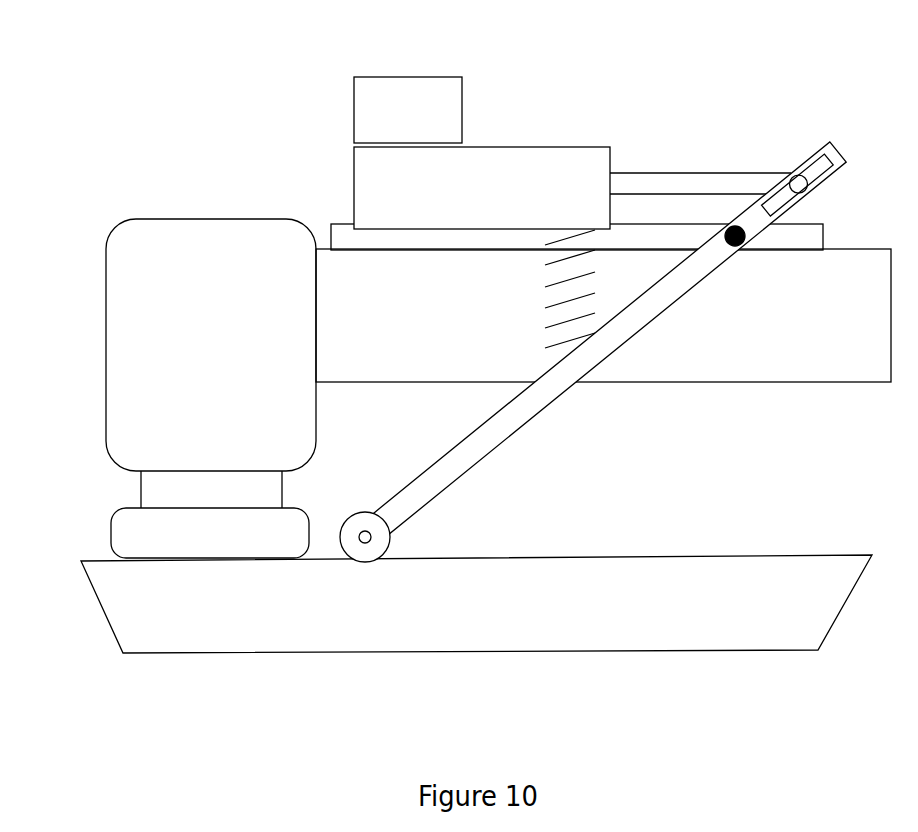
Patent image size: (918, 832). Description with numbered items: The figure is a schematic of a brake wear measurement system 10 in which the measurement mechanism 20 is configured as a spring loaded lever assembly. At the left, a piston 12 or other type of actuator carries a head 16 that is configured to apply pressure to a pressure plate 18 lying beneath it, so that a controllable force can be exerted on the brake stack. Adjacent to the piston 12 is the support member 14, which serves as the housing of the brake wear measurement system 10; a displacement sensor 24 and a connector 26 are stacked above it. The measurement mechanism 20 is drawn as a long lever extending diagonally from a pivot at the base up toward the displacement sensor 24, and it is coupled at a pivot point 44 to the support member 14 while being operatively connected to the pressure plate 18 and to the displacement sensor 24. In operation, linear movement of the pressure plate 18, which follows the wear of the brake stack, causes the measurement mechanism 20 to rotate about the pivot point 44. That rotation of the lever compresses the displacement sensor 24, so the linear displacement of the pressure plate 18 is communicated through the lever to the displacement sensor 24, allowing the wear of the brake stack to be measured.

The brake wear measurement system 10 is at (228, 86).
The piston 12 is at (181, 269).
The support member 14 is at (733, 352).
The head 16 is at (148, 543).
The pressure plate 18 is at (207, 654).
The measurement mechanism 20 is at (479, 433).
The displacement sensor 24 is at (544, 175).
The connector 26 is at (429, 102).
The pivot point 44 is at (745, 237).